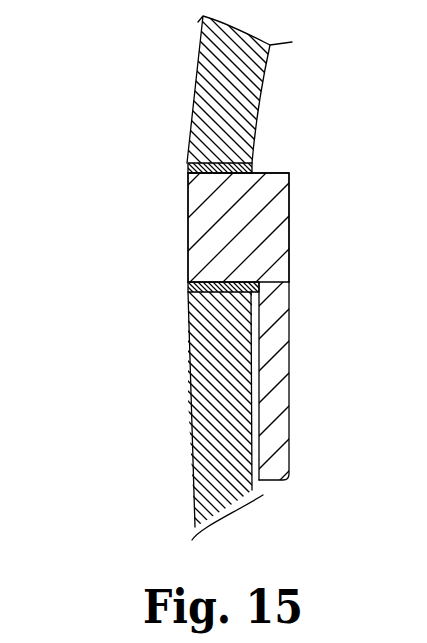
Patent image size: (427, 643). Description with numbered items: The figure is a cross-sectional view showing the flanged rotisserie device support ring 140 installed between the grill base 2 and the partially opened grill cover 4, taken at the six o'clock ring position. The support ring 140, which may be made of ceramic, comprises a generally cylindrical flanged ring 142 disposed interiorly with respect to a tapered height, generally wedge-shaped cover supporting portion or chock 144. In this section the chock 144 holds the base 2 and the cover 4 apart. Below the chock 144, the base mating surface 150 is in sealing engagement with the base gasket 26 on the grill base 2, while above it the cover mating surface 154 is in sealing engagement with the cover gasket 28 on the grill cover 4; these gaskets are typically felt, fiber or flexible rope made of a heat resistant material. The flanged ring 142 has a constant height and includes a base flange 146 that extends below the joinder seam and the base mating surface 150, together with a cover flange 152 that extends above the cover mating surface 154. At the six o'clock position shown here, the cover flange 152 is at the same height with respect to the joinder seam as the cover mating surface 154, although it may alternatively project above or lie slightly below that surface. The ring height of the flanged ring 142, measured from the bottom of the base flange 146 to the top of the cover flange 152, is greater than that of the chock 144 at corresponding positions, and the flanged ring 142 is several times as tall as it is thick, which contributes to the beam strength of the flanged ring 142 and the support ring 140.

The grill base 2 is at (207, 372).
The grill cover 4 is at (197, 92).
The base gasket 26 is at (207, 284).
The cover gasket 28 is at (196, 170).
The support ring 140 is at (124, 213).
The flanged ring 142 is at (289, 233).
The chock 144 is at (193, 237).
The base flange 146 is at (278, 481).
The base mating surface 150 is at (262, 266).
The cover flange 152 is at (268, 173).
The cover mating surface 154 is at (274, 201).